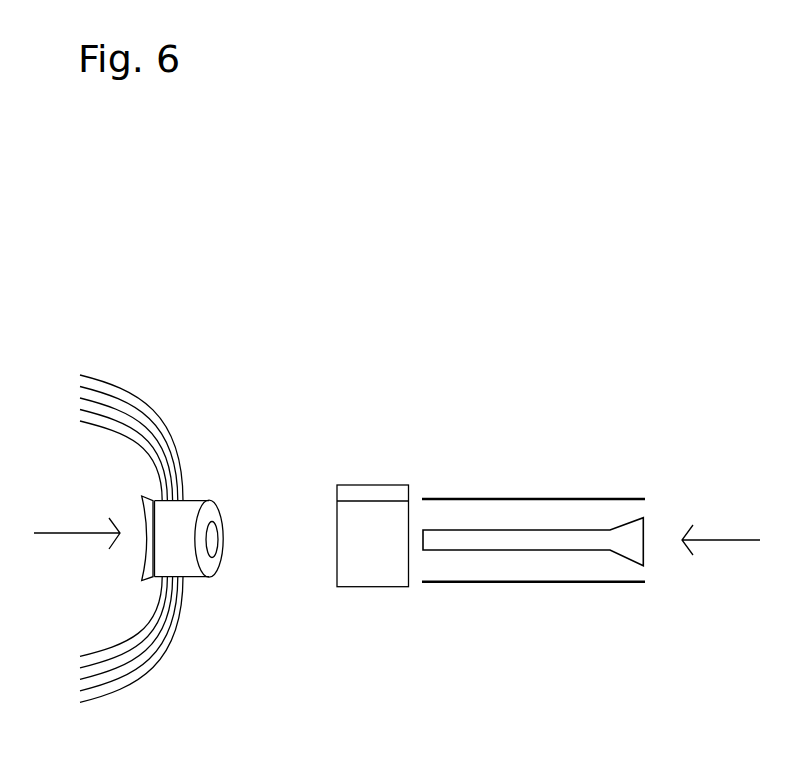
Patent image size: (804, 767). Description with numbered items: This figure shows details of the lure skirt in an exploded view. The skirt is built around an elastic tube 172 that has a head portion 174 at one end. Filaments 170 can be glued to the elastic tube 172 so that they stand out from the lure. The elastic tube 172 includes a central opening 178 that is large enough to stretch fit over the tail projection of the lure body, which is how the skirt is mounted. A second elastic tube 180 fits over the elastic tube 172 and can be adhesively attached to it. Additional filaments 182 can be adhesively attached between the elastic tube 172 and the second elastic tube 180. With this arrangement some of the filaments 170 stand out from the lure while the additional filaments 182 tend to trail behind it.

The filaments 170 is at (190, 401).
The elastic tube 172 is at (193, 500).
The head portion 174 is at (151, 496).
The central opening 178 is at (217, 547).
The second elastic tube 180 is at (383, 495).
The additional filaments 182 is at (645, 528).